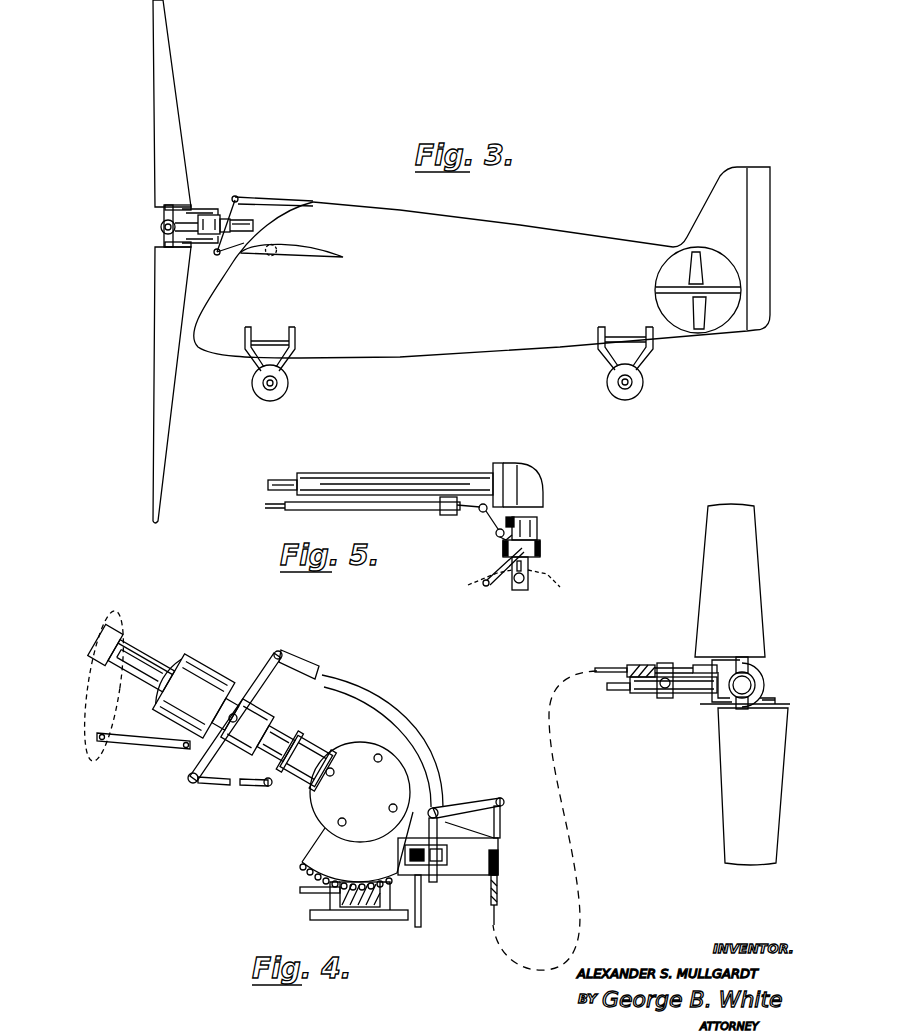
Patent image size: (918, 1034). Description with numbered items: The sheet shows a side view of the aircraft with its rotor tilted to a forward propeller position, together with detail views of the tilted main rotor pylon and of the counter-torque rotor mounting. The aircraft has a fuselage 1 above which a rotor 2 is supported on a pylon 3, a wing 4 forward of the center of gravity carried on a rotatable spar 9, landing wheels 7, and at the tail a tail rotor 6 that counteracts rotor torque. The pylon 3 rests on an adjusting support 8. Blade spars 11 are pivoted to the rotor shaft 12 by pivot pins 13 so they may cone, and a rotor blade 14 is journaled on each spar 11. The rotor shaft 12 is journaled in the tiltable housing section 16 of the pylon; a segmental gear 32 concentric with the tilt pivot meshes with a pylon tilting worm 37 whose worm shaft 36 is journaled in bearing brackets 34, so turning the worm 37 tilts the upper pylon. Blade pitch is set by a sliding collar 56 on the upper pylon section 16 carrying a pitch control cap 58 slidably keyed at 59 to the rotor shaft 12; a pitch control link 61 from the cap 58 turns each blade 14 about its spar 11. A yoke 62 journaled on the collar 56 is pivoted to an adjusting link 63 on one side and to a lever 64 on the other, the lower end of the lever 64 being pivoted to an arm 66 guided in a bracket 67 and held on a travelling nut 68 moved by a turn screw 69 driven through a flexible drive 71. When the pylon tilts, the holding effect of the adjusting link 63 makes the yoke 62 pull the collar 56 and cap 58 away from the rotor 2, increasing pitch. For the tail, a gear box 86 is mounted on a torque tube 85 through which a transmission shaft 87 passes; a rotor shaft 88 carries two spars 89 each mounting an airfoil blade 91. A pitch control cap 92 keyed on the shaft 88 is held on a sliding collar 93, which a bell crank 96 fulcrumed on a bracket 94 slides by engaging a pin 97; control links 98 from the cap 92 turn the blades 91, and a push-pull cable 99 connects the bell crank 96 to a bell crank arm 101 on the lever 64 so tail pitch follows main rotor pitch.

In FIG. 3, the fuselage 1 is at (513, 233).
In FIG. 3, the rotor 2 is at (187, 261).
In FIG. 3, the pylon 3 is at (265, 216).
In FIG. 3, the wing 4 is at (307, 252).
In FIG. 3, the tail rotor 6 is at (698, 302).
In FIG. 4, the tail rotor 6 is at (650, 737).
In FIG. 3, the landing wheels 7 is at (286, 382).
In FIG. 4, the adjusting support 8 is at (304, 872).
In FIG. 3, the spar 9 is at (274, 256).
In FIG. 3, the spars 11 is at (163, 210).
In FIG. 3, the rotor shaft 12 is at (186, 222).
In FIG. 4, the rotor shaft 12 is at (148, 656).
In FIG. 3, the pivot pins 13 is at (160, 227).
In FIG. 4, the pivot pins 13 is at (84, 672).
In FIG. 3, the rotor blade 14 is at (178, 132).
In FIG. 4, the rotor blade 14 is at (98, 698).
In FIG. 3, the tiltable housing section 16 is at (256, 226).
In FIG. 4, the tiltable housing section 16 is at (302, 729).
In FIG. 4, the segmental gear 32 is at (322, 843).
In FIG. 4, the bearing brackets 34 is at (395, 916).
In FIG. 4, the worm shaft 36 is at (300, 891).
In FIG. 4, the pylon tilting worm 37 is at (362, 909).
In FIG. 3, the sliding collar 56 is at (228, 219).
In FIG. 4, the sliding collar 56 is at (260, 702).
In FIG. 3, the pitch control cap 58 is at (212, 215).
In FIG. 4, the pitch control cap 58 is at (201, 663).
In FIG. 4, the key 59 is at (150, 673).
In FIG. 3, the pitch control link 61 is at (206, 244).
In FIG. 4, the pitch control link 61 is at (142, 743).
In FIG. 3, the yoke 62 is at (216, 255).
In FIG. 4, the yoke 62 is at (268, 666).
In FIG. 3, the adjusting link 63 is at (226, 254).
In FIG. 4, the adjusting link 63 is at (251, 786).
In FIG. 3, the lever 64 is at (262, 198).
In FIG. 4, the lever 64 is at (352, 691).
In FIG. 4, the arm 66 is at (441, 831).
In FIG. 4, the bracket 67 is at (500, 864).
In FIG. 4, the travelling nut 68 is at (441, 863).
In FIG. 4, the turn screw 69 is at (423, 846).
In FIG. 4, the flexible drive 71 is at (422, 900).
In FIG. 5, the torque tube 85 is at (400, 473).
In FIG. 4, the torque tube 85 is at (680, 695).
In FIG. 5, the gear box 86 is at (526, 475).
In FIG. 5, the transmission shaft 87 is at (290, 478).
In FIG. 4, the transmission shaft 87 is at (623, 691).
In FIG. 5, the rotor shaft 88 is at (530, 568).
In FIG. 4, the rotor shaft 88 is at (756, 684).
In FIG. 5, the spars 89 is at (520, 585).
In FIG. 4, the spars 89 is at (750, 668).
In FIG. 3, the airfoil blade 91 is at (701, 270).
In FIG. 5, the airfoil blade 91 is at (546, 583).
In FIG. 4, the airfoil blade 91 is at (755, 534).
In FIG. 5, the pitch control cap 92 is at (541, 548).
In FIG. 5, the sliding collar 93 is at (540, 527).
In FIG. 5, the bracket 94 is at (496, 523).
In FIG. 5, the bell crank 96 is at (500, 539).
In FIG. 4, the bell crank 96 is at (696, 692).
In FIG. 5, the pin 97 is at (538, 519).
In FIG. 5, the control link 98 is at (504, 573).
In FIG. 4, the control link 98 is at (710, 662).
In FIG. 5, the push-pull cable 99 is at (470, 509).
In FIG. 4, the push-pull cable 99 is at (501, 831).
In FIG. 4, the bell crank arm 101 is at (476, 806).